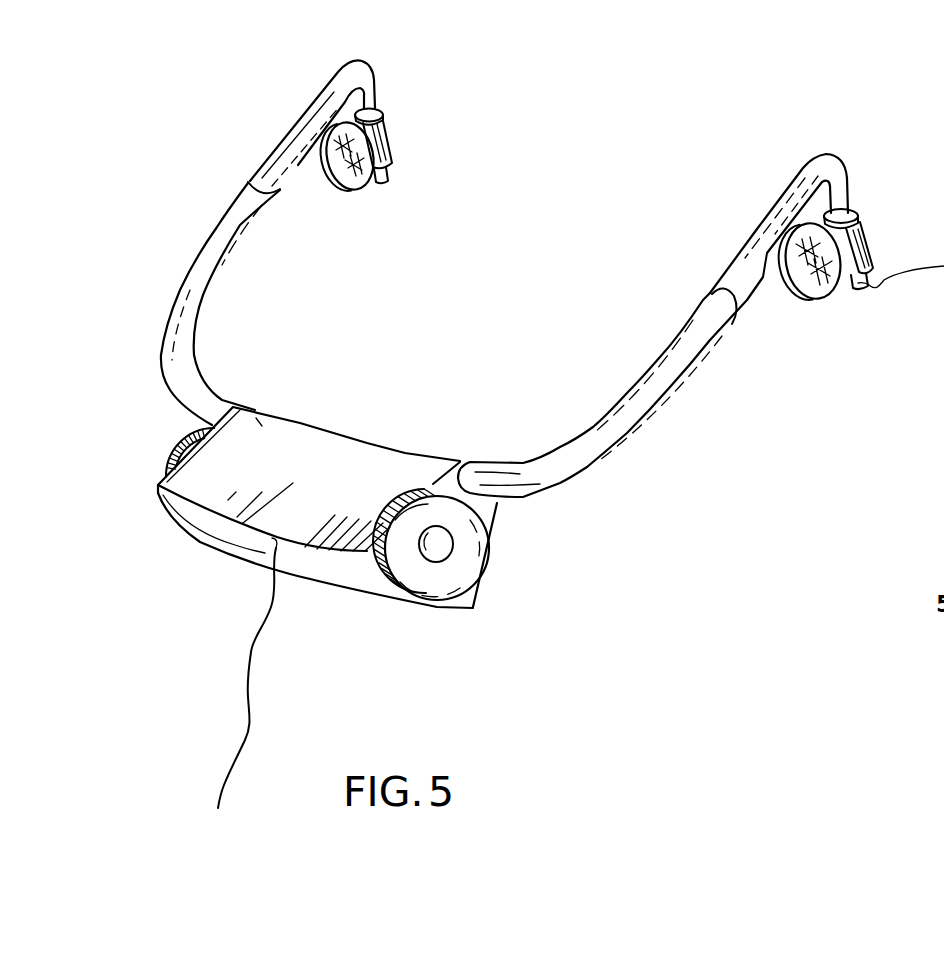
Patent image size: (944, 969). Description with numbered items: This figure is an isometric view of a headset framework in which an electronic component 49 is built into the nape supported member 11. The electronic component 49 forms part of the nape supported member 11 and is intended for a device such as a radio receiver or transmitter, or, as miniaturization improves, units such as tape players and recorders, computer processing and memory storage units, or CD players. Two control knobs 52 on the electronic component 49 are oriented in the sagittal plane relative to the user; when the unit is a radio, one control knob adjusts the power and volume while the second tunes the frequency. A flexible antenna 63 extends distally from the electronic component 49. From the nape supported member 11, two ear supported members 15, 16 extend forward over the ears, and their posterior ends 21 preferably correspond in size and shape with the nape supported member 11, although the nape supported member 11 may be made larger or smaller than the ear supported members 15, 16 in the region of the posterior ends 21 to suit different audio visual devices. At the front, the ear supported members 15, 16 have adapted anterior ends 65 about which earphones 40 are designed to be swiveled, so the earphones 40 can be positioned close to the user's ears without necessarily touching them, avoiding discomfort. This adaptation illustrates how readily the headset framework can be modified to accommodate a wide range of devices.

The nape supported member 11 is at (555, 457).
The ear supported member 15 is at (298, 118).
The ear supported member 16 is at (790, 185).
The posterior ends 21 is at (258, 182).
The earphones 40 is at (355, 184).
The electronic component 49 is at (227, 492).
The control knobs 52 is at (178, 448).
The flexible antenna 63 is at (248, 733).
The adapted anterior ends 65 is at (375, 96).